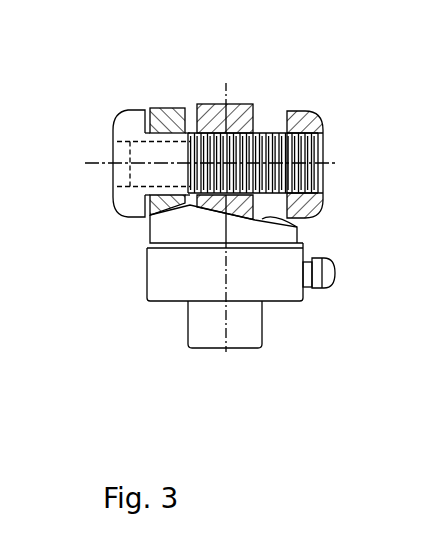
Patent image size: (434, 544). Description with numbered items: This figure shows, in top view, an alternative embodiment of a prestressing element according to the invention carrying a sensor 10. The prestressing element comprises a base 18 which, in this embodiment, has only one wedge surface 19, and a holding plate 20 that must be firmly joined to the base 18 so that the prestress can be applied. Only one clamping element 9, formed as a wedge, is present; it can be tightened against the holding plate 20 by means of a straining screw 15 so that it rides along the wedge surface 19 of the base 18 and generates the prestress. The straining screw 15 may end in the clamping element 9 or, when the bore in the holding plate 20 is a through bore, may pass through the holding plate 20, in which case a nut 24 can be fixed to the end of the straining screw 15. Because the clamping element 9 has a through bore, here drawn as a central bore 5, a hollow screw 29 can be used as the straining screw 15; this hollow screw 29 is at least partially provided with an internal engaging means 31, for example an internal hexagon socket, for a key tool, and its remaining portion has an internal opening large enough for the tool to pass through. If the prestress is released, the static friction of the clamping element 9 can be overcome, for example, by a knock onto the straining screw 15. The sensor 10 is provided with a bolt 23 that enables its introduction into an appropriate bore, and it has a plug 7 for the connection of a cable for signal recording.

The central bore 5 is at (362, 133).
The plug 7 is at (330, 275).
The clamping element 9 is at (243, 104).
The sensor 10 is at (163, 280).
The straining screw 15 is at (360, 153).
The base 18 is at (170, 223).
The wedge surface 19 is at (300, 226).
The holding plate 20 is at (166, 112).
The bolt 23 is at (245, 331).
The nut 24 is at (322, 197).
The hollow screw 29 is at (317, 124).
The engaging means 31 is at (116, 152).